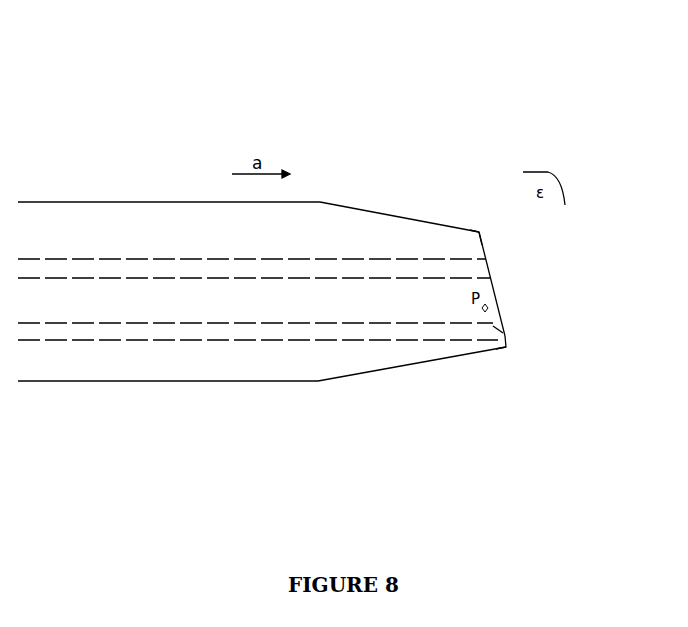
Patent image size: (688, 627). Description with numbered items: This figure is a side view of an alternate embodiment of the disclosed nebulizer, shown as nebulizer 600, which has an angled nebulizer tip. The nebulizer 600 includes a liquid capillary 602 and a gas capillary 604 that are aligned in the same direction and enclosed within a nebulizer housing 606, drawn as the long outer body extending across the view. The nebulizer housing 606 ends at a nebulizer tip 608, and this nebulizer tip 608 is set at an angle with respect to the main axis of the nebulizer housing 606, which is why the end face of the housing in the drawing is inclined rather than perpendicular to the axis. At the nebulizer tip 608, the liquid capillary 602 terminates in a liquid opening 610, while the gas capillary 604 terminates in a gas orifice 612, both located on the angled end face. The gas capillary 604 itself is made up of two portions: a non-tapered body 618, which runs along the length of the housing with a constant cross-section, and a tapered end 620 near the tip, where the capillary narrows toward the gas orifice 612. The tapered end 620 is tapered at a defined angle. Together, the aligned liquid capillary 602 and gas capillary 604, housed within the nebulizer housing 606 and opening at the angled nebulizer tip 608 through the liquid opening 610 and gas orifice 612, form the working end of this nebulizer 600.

The nebulizer 600 is at (333, 42).
The liquid capillary 602 is at (381, 266).
The gas capillary 604 is at (263, 333).
The nebulizer housing 606 is at (177, 198).
The nebulizer tip 608 is at (497, 297).
The liquid opening 610 is at (493, 267).
The gas orifice 612 is at (503, 330).
The non-tapered body 618 is at (450, 330).
The tapered end 620 is at (497, 348).